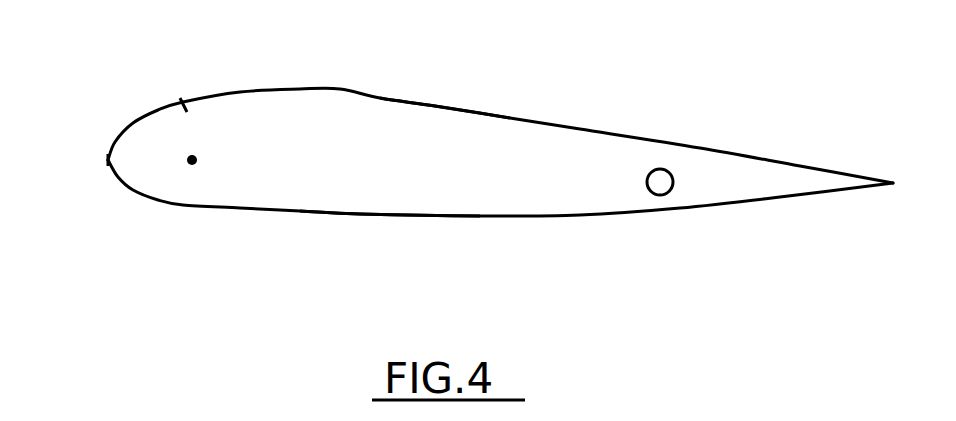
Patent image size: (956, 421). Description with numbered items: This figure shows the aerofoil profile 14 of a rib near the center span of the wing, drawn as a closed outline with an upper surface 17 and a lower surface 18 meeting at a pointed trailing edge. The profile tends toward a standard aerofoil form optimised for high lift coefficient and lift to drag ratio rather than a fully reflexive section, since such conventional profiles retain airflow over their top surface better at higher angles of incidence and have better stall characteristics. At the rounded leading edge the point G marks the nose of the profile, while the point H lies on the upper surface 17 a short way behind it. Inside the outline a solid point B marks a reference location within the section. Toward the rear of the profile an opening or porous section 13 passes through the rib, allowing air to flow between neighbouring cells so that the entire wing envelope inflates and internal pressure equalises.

The airfoil (wing profile) 14 is at (286, 120).
The upper surface of the airfoil 17 is at (437, 108).
The lower surface of the airfoil 18 is at (367, 217).
The opening or porous section 13 is at (661, 177).
The point H on the upper surface H is at (183, 104).
The leading edge point G is at (107, 163).
The center point B is at (192, 170).